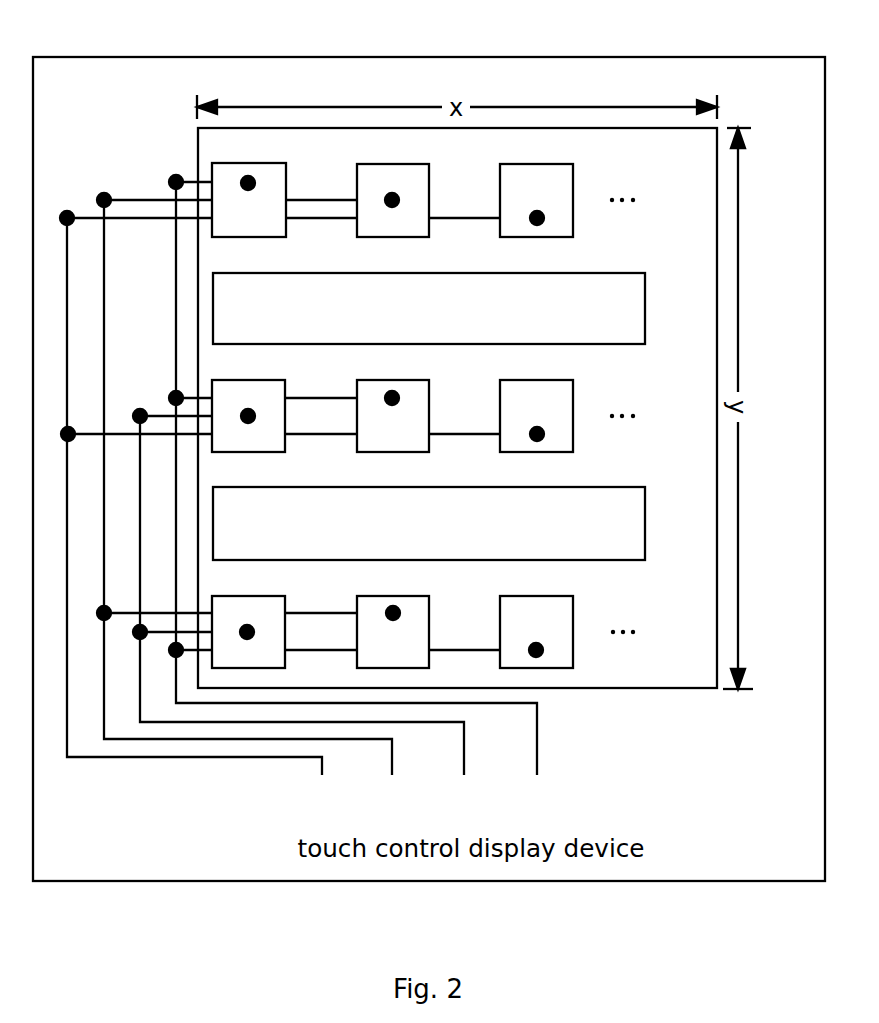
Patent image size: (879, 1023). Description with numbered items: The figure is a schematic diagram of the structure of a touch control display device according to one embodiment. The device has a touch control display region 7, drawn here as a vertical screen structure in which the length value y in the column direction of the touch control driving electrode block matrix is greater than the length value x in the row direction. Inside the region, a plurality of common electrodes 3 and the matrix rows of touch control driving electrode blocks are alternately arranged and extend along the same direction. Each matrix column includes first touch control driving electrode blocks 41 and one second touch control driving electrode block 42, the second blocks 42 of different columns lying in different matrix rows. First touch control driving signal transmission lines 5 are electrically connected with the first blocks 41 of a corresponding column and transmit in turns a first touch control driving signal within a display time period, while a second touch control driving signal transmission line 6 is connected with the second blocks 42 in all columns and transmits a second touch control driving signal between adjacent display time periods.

The common electrode 3 is at (645, 327).
The first touch control driving signal transmission line 5 is at (213, 723).
The second touch control driving signal transmission line 6 is at (537, 733).
The touch control display region 7 is at (680, 689).
The first touch control driving electrode block 41 is at (378, 164).
The second touch control driving electrode block 42 is at (234, 163).